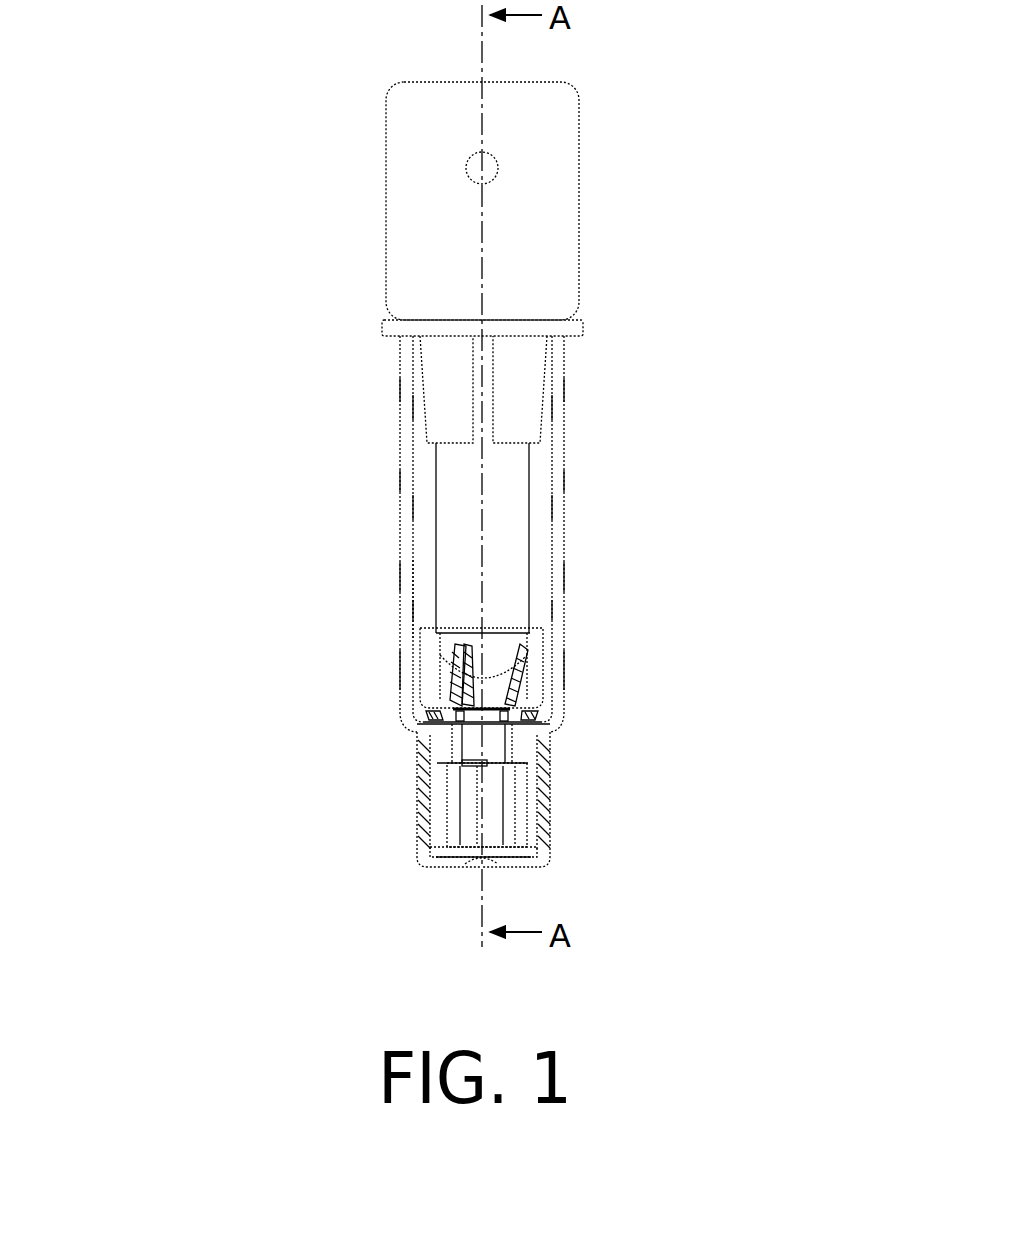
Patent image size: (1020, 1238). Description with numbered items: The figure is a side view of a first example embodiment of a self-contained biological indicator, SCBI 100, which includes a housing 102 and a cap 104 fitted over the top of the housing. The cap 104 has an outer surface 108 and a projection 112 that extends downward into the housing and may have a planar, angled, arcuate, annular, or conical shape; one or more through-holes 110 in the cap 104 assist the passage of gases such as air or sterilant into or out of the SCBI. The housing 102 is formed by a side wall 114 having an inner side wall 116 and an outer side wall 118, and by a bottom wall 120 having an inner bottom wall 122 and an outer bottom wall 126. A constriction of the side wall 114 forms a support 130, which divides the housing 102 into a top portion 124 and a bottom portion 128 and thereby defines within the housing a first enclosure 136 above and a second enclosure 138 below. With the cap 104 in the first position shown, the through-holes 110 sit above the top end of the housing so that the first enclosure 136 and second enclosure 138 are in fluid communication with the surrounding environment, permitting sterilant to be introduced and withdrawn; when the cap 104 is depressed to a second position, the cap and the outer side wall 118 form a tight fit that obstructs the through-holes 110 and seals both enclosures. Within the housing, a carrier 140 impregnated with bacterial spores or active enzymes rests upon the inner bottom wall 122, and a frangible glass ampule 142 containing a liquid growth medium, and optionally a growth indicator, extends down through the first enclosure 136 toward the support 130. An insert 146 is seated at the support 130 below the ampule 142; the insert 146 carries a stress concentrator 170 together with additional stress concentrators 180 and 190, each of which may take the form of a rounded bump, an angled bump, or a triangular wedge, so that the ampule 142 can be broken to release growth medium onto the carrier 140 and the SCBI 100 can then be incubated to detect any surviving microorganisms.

The self-contained biological indicator 100 is at (203, 156).
The housing 102 is at (306, 423).
The cap 104 is at (661, 134).
The outer surface 108 is at (535, 218).
The through-hole 110 is at (495, 160).
The projection 112 is at (508, 378).
The side wall 114 is at (408, 521).
The inner side wall 116 is at (410, 552).
The outer side wall 118 is at (400, 487).
The bottom wall 120 is at (428, 865).
The inner bottom wall 122 is at (515, 856).
The top portion 124 is at (624, 565).
The outer bottom wall 126 is at (452, 868).
The bottom portion 128 is at (637, 772).
The support 130 is at (545, 722).
The first enclosure 136 is at (424, 598).
The second enclosure 138 is at (440, 800).
The carrier 140 is at (532, 855).
The frangible glass ampule 142 is at (505, 553).
The insert 146 is at (495, 687).
The stress concentrator 170 is at (460, 690).
The stress concentrator 180 is at (463, 657).
The stress concentrator 190 is at (523, 690).